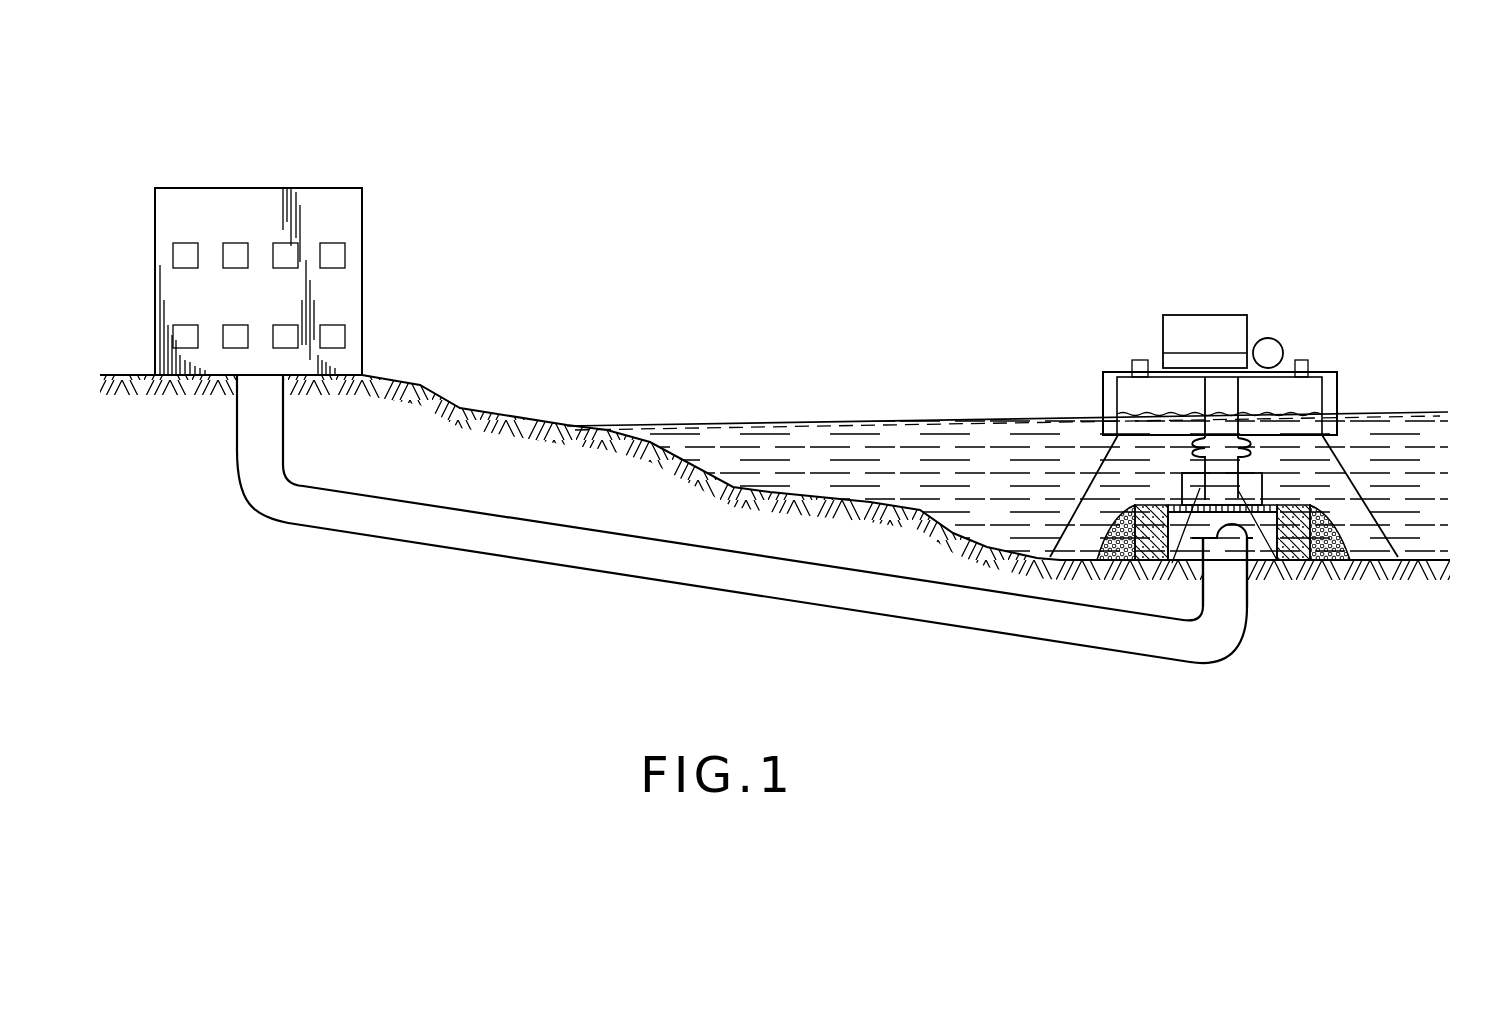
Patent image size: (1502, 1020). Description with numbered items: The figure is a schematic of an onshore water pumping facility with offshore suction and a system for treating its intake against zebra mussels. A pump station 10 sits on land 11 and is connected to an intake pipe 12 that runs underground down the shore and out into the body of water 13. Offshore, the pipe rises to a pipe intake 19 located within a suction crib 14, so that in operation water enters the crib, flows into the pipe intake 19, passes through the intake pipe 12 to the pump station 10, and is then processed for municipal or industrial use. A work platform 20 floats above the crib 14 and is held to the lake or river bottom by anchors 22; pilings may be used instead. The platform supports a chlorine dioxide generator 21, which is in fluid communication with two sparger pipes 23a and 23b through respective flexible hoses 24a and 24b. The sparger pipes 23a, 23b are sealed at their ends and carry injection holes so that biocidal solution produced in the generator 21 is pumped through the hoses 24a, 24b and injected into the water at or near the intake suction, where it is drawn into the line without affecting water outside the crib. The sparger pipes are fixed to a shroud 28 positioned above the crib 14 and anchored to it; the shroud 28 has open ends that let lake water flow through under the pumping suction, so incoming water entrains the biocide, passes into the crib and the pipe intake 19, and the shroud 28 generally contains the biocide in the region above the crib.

The pump station 10 is at (267, 187).
The land 11 is at (460, 408).
The intake pipe 12 is at (548, 551).
The body of water 13 is at (798, 448).
The suction crib 14 is at (1125, 500).
The pipe intake 19 is at (1253, 543).
The work platform 20 is at (1127, 363).
The chlorine dioxide generator 21 is at (1208, 327).
The anchors 22 is at (1047, 552).
The sparger pipe 23a is at (1180, 566).
The sparger pipe 23b is at (1307, 563).
The flexible hose 24a is at (1198, 453).
The flexible hose 24b is at (1245, 453).
The shroud 28 is at (1267, 492).